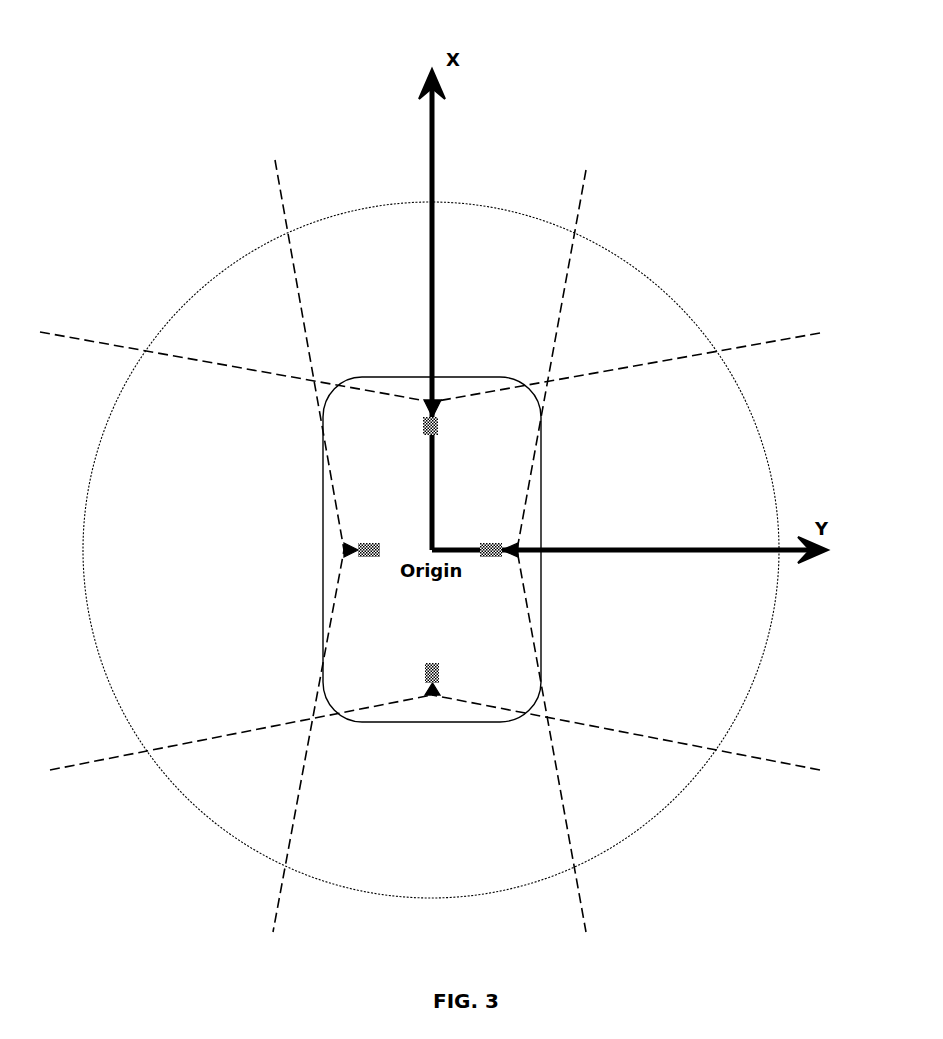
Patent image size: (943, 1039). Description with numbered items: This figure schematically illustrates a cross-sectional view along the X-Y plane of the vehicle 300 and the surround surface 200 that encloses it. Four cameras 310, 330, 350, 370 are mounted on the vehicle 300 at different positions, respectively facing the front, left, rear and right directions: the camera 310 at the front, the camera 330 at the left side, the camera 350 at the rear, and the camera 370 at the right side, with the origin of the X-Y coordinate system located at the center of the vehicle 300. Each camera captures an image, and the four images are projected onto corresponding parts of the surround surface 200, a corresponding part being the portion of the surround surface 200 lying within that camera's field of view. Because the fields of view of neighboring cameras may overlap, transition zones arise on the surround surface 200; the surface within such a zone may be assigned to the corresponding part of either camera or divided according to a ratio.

The surround surface 200 is at (657, 283).
The vehicle 300 is at (541, 477).
The camera 310 is at (438, 404).
The camera 330 is at (345, 543).
The camera 350 is at (432, 695).
The camera 370 is at (518, 550).